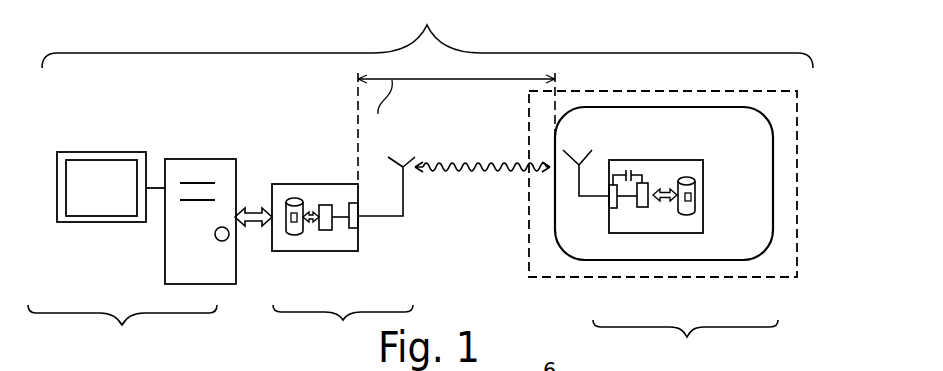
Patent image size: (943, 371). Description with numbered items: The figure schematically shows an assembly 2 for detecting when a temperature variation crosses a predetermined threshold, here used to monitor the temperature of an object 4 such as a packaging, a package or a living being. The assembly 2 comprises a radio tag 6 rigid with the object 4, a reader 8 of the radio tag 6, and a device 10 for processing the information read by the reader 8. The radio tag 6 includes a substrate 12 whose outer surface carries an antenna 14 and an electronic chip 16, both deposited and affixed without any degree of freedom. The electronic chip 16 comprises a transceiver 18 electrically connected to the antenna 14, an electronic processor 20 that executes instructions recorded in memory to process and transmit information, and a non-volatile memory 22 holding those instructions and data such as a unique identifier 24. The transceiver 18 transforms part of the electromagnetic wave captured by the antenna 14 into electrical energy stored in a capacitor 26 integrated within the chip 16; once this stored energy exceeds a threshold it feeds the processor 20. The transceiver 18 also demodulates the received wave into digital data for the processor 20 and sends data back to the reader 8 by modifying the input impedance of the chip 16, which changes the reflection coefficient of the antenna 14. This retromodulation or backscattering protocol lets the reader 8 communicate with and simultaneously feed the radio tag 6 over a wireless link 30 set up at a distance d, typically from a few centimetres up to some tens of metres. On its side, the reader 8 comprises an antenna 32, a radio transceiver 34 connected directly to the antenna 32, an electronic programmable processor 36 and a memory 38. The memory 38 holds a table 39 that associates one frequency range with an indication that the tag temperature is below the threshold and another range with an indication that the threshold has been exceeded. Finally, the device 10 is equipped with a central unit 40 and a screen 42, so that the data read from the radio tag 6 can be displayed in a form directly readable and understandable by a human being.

The assembly 2 is at (452, 184).
The object 4 is at (806, 112).
The radio tag 6 is at (783, 145).
The reader 8 is at (343, 250).
The processing device 10 is at (132, 254).
The substrate 12 is at (760, 210).
The antenna 14 is at (578, 183).
The electronic chip 16 is at (685, 209).
The transceiver 18 is at (612, 208).
The electronic processor 20 is at (643, 207).
The non-volatile memory 22 is at (683, 216).
The unique identifier 24 is at (695, 198).
The capacitor 26 is at (632, 173).
The wireless link 30 is at (452, 164).
The antenna 32 is at (385, 218).
The radio transceiver 34 is at (351, 229).
The electronic programmable processor 36 is at (329, 231).
The memory 38 is at (292, 237).
The table 39 is at (294, 198).
The central unit 40 is at (170, 253).
The screen 42 is at (69, 223).